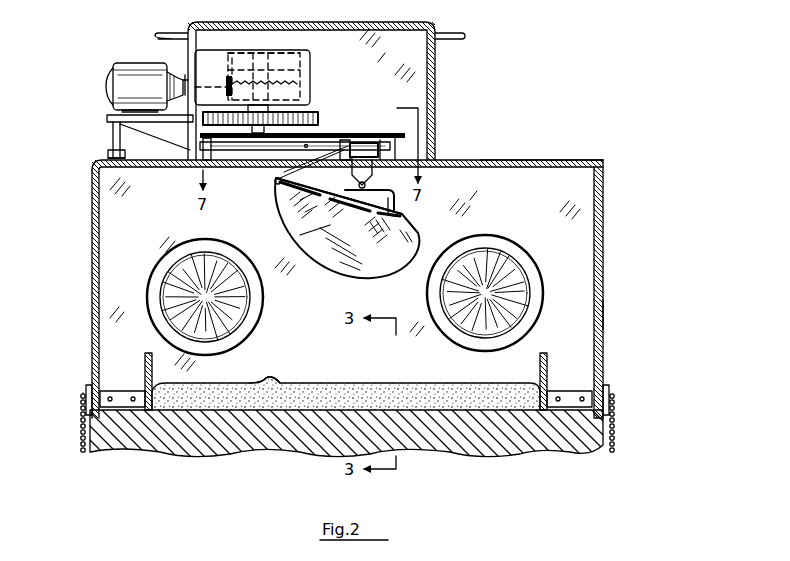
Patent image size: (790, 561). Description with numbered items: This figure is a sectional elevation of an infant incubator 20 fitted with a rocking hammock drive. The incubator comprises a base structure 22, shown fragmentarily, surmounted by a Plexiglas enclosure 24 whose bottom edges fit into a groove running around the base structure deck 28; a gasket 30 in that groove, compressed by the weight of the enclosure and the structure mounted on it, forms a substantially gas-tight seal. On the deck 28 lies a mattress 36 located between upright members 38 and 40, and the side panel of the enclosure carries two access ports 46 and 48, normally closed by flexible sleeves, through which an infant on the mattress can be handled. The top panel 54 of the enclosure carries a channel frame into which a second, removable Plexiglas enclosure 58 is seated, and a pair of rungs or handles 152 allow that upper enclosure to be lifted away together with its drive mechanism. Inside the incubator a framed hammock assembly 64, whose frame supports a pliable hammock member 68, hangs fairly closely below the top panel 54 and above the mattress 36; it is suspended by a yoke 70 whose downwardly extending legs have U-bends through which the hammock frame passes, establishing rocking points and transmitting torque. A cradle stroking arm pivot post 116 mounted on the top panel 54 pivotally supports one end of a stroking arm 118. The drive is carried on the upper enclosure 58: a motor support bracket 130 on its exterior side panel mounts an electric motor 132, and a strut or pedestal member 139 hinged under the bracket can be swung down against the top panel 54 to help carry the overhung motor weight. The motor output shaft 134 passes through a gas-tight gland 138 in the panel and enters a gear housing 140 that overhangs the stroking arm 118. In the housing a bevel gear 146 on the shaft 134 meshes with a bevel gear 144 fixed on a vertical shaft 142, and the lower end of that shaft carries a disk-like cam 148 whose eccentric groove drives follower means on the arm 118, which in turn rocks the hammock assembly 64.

The incubator 20 is at (614, 254).
The base structure 22 is at (588, 455).
The Plexiglas enclosure 24 is at (606, 318).
The base structure deck 28 is at (280, 363).
The gasket 30 is at (84, 432).
The mattress 36 is at (390, 383).
The upright member 38 is at (146, 368).
The upright member 40 is at (549, 380).
The access port 46 is at (182, 252).
The access port 48 is at (516, 228).
The top panel 54 is at (547, 160).
The enclosure 58 is at (437, 103).
The framed hammock assembly 64 is at (275, 193).
The hammock member 68 is at (298, 236).
The yoke 70 is at (374, 186).
The cradle stroking arm pivot post 116 is at (216, 146).
The stroking arm 118 is at (366, 142).
The motor support bracket 130 is at (118, 130).
The electric motor 132 is at (116, 63).
The output shaft 134 is at (227, 78).
The gland 138 is at (184, 76).
The strut or pedestal member 139 is at (108, 152).
The gear housing 140 is at (311, 62).
The shaft 142 is at (312, 107).
The bevel gear 144 is at (298, 53).
The bevel gear 146 is at (236, 56).
The cam 148 is at (322, 119).
The handles 152 is at (445, 36).